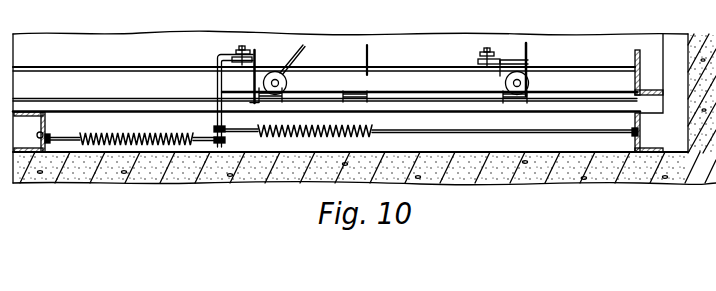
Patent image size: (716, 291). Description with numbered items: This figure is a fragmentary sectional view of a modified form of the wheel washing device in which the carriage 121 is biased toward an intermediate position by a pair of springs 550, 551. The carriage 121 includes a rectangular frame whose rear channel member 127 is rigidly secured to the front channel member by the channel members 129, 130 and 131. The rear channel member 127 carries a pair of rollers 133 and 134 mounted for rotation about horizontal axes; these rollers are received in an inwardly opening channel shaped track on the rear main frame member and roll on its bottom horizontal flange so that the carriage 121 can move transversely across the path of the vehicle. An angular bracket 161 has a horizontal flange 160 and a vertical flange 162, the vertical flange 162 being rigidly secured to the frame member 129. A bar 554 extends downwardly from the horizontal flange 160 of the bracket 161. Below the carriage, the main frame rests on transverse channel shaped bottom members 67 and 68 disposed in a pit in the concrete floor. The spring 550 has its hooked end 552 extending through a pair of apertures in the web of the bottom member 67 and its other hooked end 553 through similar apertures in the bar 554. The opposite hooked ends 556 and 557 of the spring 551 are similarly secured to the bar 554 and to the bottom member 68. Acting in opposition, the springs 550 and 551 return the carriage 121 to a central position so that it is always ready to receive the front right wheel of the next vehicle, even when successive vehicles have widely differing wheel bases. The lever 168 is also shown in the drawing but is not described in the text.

The carriage 121 is at (577, 61).
The rear channel member 127 is at (398, 81).
The channel member 129 is at (283, 102).
The channel member 130 is at (377, 101).
The channel member 131 is at (503, 104).
The roller 133 is at (287, 76).
The roller 134 is at (528, 76).
The horizontal flange 160 is at (250, 49).
The angular bracket 161 is at (257, 57).
The vertical flange 162 is at (245, 93).
The lever 168 is at (292, 62).
The bottom member 67 is at (48, 122).
The bottom member 68 is at (643, 124).
The spring 550 is at (141, 134).
The spring 551 is at (316, 133).
The hooked end 552 is at (37, 135).
The hooked end 553 is at (225, 143).
The bar 554 is at (216, 82).
The hooked end 556 is at (214, 130).
The hooked end 557 is at (639, 133).